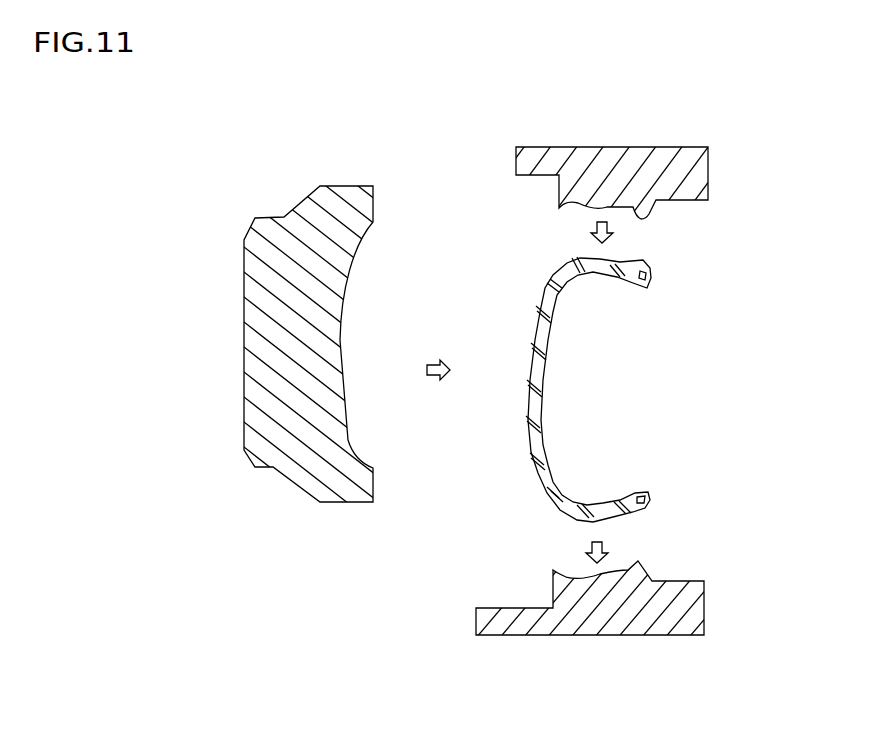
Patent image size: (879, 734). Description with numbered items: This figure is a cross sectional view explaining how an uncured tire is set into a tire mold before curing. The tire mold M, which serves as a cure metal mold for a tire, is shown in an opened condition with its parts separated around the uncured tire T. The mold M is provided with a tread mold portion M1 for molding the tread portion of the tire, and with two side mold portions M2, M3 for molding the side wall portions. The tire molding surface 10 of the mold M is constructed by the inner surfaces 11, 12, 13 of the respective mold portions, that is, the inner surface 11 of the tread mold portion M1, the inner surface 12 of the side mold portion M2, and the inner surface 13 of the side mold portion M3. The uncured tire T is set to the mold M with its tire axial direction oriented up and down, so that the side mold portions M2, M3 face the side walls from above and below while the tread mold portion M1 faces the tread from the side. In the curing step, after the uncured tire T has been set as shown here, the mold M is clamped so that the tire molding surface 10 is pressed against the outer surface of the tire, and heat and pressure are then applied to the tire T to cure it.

The tire mold M is at (405, 594).
The tread mold portion M1 is at (243, 302).
The side mold portion M2 is at (633, 147).
The side mold portion M3 is at (630, 637).
The uncured tire T is at (528, 445).
The tire molding surface 10 is at (477, 390).
The inner surface 11 is at (343, 300).
The inner surface 12 is at (577, 205).
The inner surface 13 is at (613, 570).